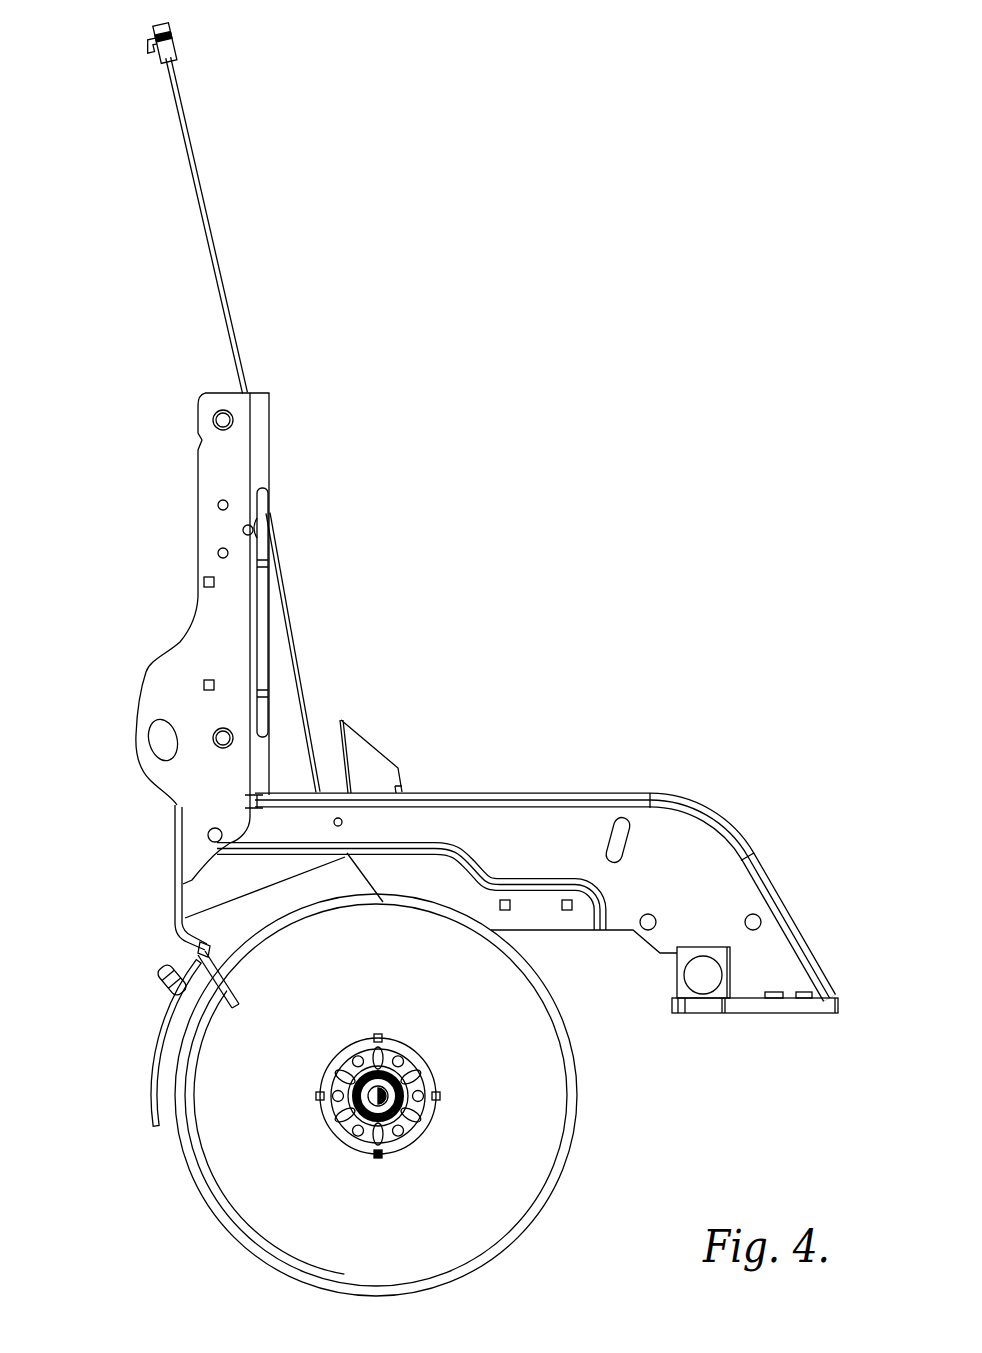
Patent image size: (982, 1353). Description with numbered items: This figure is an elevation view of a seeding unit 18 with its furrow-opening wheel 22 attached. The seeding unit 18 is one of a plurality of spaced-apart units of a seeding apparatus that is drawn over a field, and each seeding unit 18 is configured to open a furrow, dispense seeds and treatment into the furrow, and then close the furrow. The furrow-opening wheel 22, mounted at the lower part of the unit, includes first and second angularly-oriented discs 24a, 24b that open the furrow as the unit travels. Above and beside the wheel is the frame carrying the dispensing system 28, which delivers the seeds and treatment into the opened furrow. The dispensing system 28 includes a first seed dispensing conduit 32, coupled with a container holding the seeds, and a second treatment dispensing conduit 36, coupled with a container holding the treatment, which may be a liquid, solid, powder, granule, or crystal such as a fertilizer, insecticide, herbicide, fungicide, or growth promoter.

The seeding unit 18 is at (540, 440).
The dispensing system 28 is at (517, 677).
The first seed dispensing conduit 32 is at (362, 763).
The furrow-opening wheel 22 is at (158, 1157).
The first angularly-oriented disc 24a is at (215, 1205).
The second angularly-oriented disc 24b is at (287, 1225).
The second treatment dispensing conduit 36 is at (197, 1008).